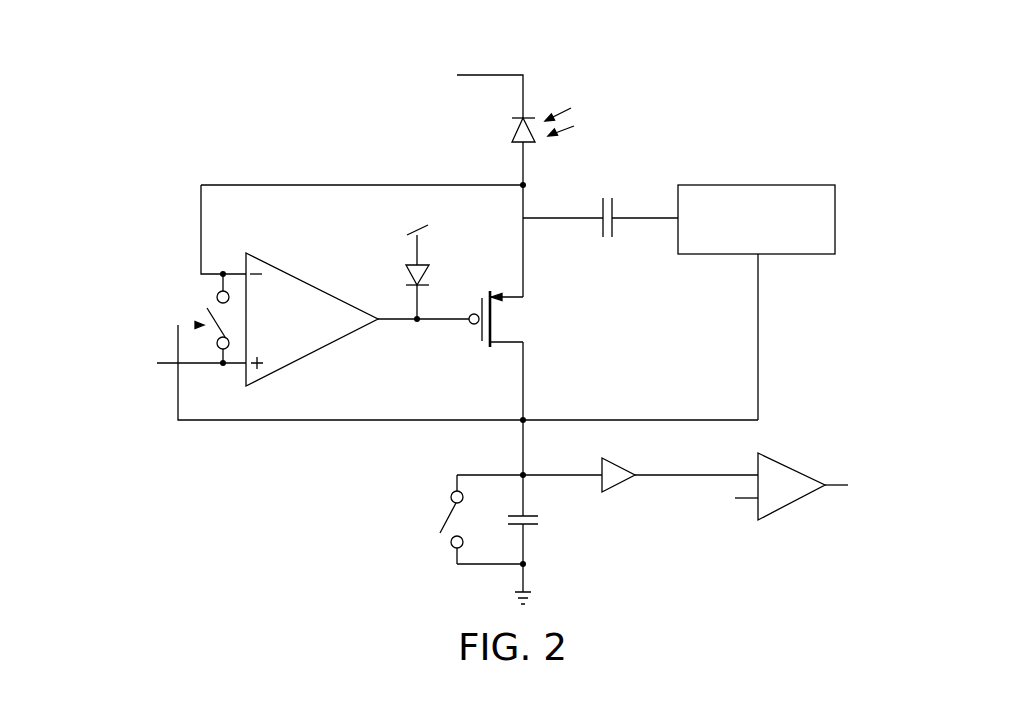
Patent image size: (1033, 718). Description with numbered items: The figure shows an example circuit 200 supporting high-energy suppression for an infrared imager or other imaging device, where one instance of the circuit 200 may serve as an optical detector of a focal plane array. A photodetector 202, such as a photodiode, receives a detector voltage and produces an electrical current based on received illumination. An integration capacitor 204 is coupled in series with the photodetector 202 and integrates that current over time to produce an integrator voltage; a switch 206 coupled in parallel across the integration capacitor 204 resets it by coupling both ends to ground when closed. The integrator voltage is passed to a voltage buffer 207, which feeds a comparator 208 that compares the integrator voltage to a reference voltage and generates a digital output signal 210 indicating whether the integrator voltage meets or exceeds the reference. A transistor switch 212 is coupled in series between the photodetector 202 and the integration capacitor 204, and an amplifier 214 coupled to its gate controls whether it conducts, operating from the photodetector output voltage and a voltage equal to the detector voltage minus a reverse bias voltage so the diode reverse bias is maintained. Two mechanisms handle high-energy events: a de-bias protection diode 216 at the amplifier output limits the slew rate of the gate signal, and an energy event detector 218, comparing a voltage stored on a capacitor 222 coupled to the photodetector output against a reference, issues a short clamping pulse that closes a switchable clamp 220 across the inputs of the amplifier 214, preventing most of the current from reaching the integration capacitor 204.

The circuit 200 is at (663, 87).
The photodetector 202 is at (515, 130).
The integration capacitor 204 is at (532, 525).
The switch 206 is at (442, 516).
The voltage buffer 207 is at (622, 487).
The comparator 208 is at (793, 503).
The digital output signal 210 is at (898, 474).
The transistor switch 212 is at (477, 336).
The amplifier 214 is at (313, 285).
The de-bias protection diode 216 is at (432, 278).
The energy event detector 218 is at (787, 185).
The switchable clamp 220 is at (203, 311).
The capacitor 222 is at (603, 214).